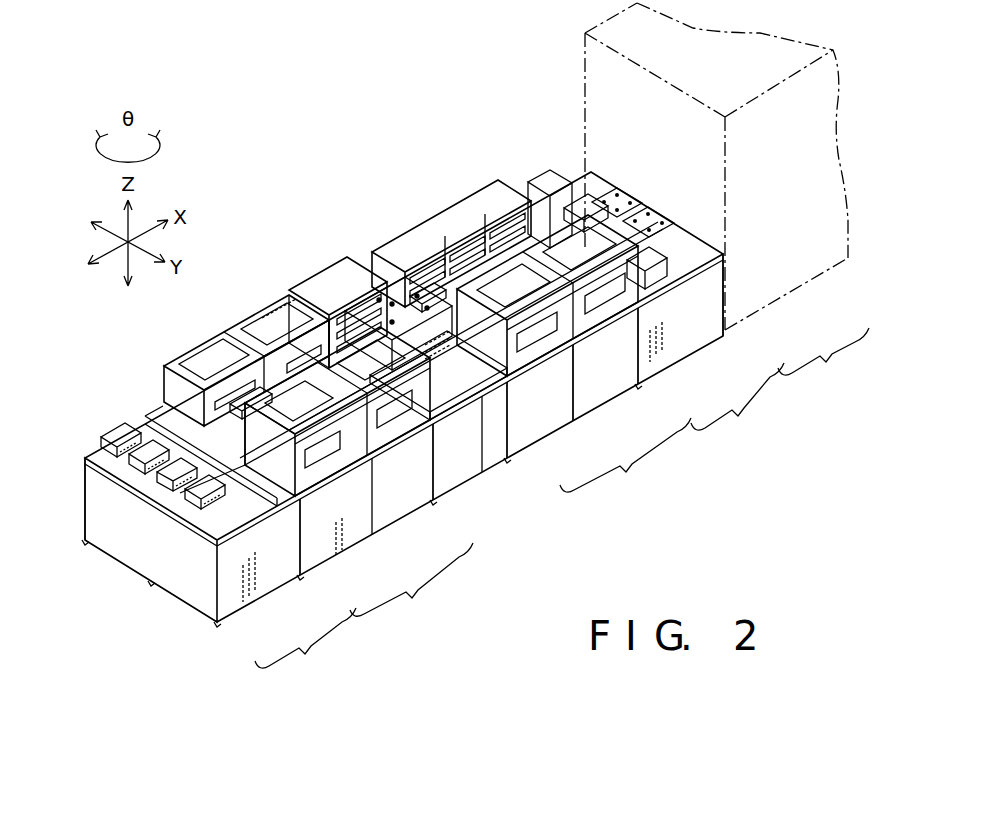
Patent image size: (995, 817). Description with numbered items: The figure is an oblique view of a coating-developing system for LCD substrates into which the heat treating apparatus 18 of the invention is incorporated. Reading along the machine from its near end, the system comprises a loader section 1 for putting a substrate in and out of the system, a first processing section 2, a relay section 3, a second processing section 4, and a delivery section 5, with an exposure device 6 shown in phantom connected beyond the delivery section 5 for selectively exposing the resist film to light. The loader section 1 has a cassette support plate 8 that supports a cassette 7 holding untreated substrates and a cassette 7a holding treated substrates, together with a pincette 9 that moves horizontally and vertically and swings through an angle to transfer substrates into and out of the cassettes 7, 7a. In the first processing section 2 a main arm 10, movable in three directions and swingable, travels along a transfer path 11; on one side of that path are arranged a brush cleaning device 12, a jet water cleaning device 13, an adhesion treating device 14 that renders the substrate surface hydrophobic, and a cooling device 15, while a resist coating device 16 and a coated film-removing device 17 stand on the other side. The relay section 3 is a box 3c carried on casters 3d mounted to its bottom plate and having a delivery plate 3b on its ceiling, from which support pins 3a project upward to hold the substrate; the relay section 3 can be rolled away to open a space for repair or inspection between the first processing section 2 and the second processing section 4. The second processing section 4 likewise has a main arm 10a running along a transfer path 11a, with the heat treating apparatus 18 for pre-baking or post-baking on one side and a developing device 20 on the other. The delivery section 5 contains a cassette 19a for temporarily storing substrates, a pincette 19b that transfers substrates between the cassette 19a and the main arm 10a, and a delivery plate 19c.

The loader section 1 is at (322, 676).
The first processing section 2 is at (415, 622).
The relay section 3 is at (516, 469).
The support pins 3a is at (388, 330).
The delivery plate 3b is at (438, 372).
The box 3c is at (490, 430).
The casters 3d is at (486, 462).
The second processing section 4 is at (652, 499).
The delivery section 5 is at (711, 345).
The exposure device 6 is at (727, 193).
The cassette 7 is at (125, 436).
The cassette 7a is at (178, 487).
The cassette support plate 8 is at (103, 445).
The pincette 9 is at (236, 482).
The main arm 10 is at (240, 405).
The main arm 10a is at (428, 298).
The transfer path 11 is at (326, 355).
The transfer path 11a is at (542, 225).
The brush cleaning device 12 is at (192, 352).
The jet water cleaning device 13 is at (270, 322).
The adhesion treating device 14 is at (336, 290).
The cooling device 15 is at (362, 322).
The resist coating device 16 is at (330, 440).
The coated film-removing device 17 is at (394, 400).
The heat treating apparatus 18 is at (486, 205).
The cassette 19a is at (657, 265).
The pincette 19b is at (586, 208).
The delivery plate 19c is at (648, 212).
The developing device 20 is at (532, 300).